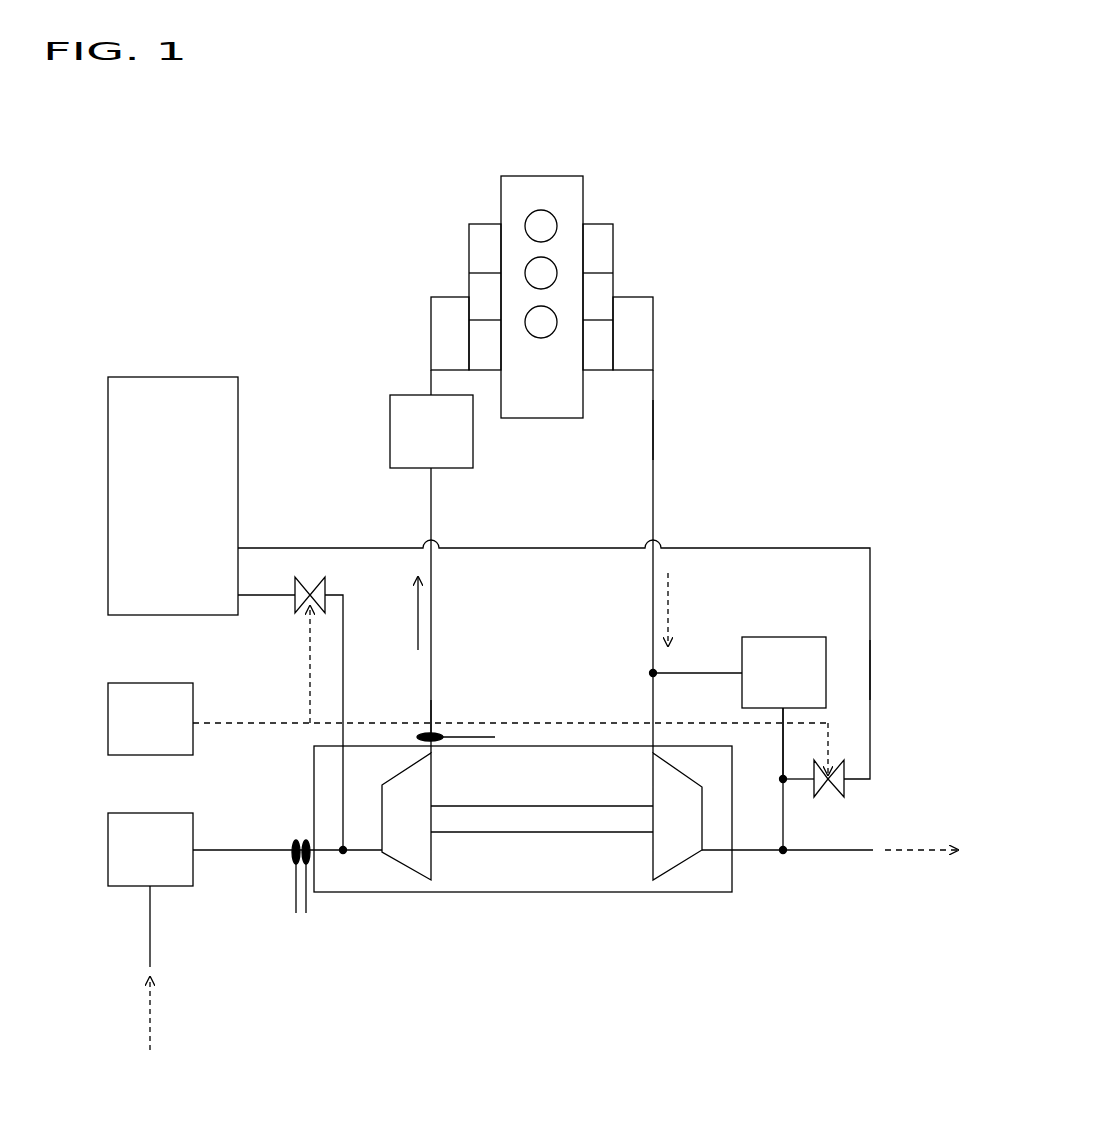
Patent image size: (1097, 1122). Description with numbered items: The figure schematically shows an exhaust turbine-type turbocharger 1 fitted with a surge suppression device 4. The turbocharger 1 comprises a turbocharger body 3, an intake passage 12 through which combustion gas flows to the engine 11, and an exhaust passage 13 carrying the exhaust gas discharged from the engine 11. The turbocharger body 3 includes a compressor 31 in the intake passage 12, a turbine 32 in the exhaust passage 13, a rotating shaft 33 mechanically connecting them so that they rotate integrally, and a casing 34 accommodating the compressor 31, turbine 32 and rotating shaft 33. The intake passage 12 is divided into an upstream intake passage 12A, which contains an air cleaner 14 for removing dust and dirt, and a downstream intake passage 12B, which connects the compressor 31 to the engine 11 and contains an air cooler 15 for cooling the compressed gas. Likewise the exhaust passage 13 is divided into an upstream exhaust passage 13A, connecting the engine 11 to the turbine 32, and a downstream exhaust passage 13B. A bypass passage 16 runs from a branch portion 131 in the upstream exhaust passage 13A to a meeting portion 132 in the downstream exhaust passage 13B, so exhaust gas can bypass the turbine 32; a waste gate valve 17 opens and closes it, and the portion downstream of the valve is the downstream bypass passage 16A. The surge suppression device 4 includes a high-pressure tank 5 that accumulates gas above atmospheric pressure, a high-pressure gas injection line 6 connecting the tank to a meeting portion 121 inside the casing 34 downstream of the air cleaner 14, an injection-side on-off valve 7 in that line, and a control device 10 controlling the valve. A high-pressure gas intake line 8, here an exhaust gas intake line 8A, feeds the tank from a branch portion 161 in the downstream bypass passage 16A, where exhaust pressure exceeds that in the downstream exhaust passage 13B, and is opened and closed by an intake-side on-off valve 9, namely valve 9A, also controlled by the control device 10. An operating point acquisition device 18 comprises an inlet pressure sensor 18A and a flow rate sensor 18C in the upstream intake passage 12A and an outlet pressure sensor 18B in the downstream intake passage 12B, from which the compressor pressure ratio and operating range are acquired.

The exhaust turbine-type turbocharger 1 is at (296, 162).
The turbocharger body 3 is at (523, 865).
The surge suppression device 4 is at (143, 375).
The high-pressure tank 5 is at (213, 377).
The high-pressure gas injection line 6 is at (314, 785).
The injection-side on-off valve 7 is at (295, 592).
The high-pressure gas intake line 8 is at (871, 600).
The exhaust gas intake line 8A is at (871, 659).
The intake-side on-off valve 9 is at (830, 795).
The intake-side on-off valve 9A is at (845, 788).
The control device 10 is at (173, 683).
The engine 11 is at (537, 176).
The intake passage 12 is at (433, 510).
The upstream intake passage 12A is at (238, 852).
The downstream intake passage 12B is at (433, 686).
The exhaust passage 13 is at (654, 503).
The upstream exhaust passage 13A is at (654, 428).
The downstream exhaust passage 13B is at (822, 852).
The air cleaner 14 is at (176, 886).
The air cooler 15 is at (473, 430).
The bypass passage 16 is at (707, 673).
The downstream bypass passage 16A is at (782, 730).
The waste gate valve 17 is at (787, 637).
The operating point acquisition device 18 is at (430, 737).
The inlet pressure sensor 18A is at (290, 903).
The outlet pressure sensor 18B is at (472, 737).
The flow rate sensor 18C is at (307, 903).
The compressor 31 is at (412, 868).
The turbine 32 is at (680, 860).
The rotating shaft 33 is at (563, 834).
The casing 34 is at (394, 893).
The meeting portion 121 is at (343, 852).
The branch portion 131 is at (651, 673).
The meeting portion 132 is at (783, 852).
The branch portion 161 is at (782, 781).